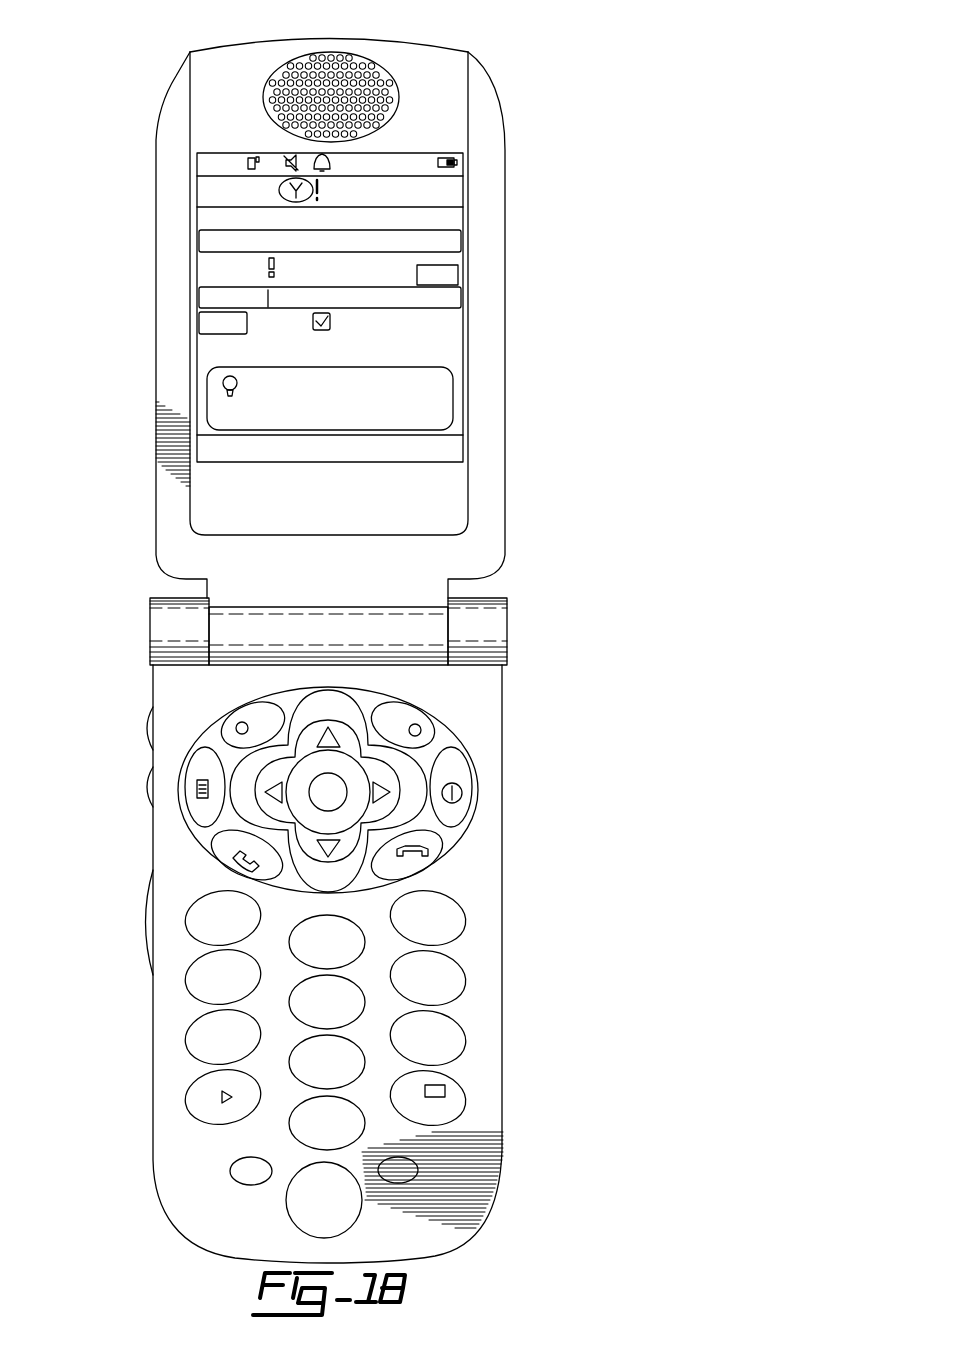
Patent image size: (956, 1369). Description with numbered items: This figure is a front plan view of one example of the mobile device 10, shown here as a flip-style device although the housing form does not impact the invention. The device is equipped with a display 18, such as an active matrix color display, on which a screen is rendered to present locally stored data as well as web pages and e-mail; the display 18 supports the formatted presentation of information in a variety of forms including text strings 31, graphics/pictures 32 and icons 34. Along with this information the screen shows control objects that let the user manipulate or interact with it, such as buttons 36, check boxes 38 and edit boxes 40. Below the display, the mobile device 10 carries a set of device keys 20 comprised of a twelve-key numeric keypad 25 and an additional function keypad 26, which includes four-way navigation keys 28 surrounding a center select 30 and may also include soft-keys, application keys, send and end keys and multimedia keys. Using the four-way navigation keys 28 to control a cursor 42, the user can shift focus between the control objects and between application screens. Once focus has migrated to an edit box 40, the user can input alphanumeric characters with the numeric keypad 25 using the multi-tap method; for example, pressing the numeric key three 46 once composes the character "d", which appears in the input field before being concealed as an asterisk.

The mobile device 10 is at (585, 298).
The display 18 is at (133, 153).
The device keys 20 is at (133, 697).
The numeric keypad 25 is at (556, 897).
The function keypad 26 is at (545, 708).
The four-way navigation keys 28 is at (340, 737).
The center select 30 is at (347, 793).
The text strings 31 is at (223, 213).
The graphics/pictures 32 is at (300, 180).
The icons 34 is at (325, 167).
The buttons 36 is at (203, 307).
The check boxes 38 is at (330, 330).
The edit boxes 40 is at (437, 300).
The cursor 42 is at (270, 298).
The numeric key 3 46 is at (457, 912).